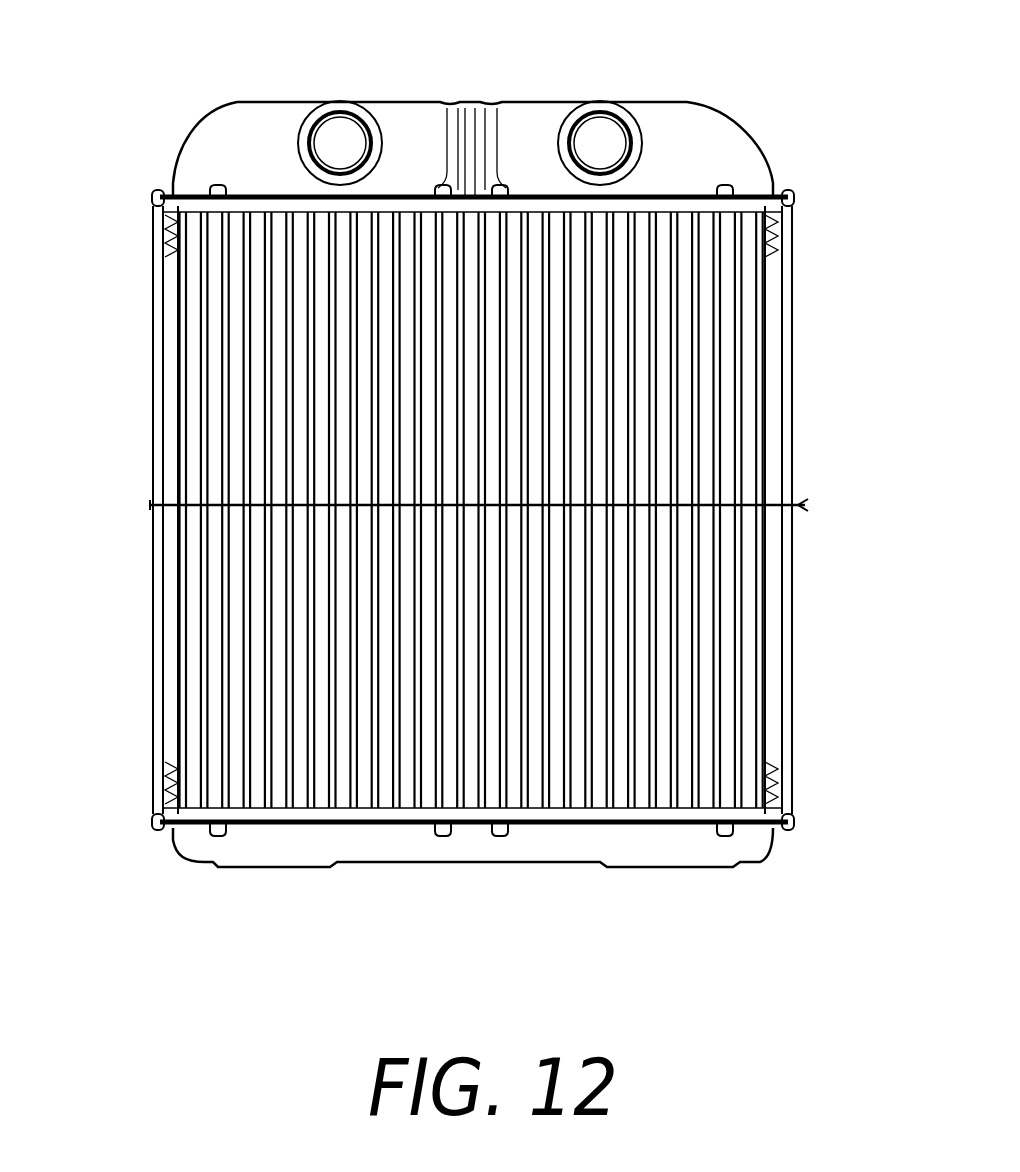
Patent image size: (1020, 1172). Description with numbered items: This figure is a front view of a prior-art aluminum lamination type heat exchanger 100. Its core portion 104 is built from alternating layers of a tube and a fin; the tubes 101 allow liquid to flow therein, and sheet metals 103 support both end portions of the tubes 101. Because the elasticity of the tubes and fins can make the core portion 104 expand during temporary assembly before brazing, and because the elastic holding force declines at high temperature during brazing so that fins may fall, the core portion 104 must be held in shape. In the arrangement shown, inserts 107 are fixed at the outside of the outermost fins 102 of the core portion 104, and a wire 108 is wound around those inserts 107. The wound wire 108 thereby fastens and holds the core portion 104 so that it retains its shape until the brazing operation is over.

The heat exchanger 100 is at (203, 108).
The tubes 101 is at (760, 640).
The outermost fins 102 is at (775, 755).
The sheet metals 103 is at (658, 207).
The core portion 104 is at (805, 206).
The inserts 107 is at (155, 292).
The wire 108 is at (730, 505).